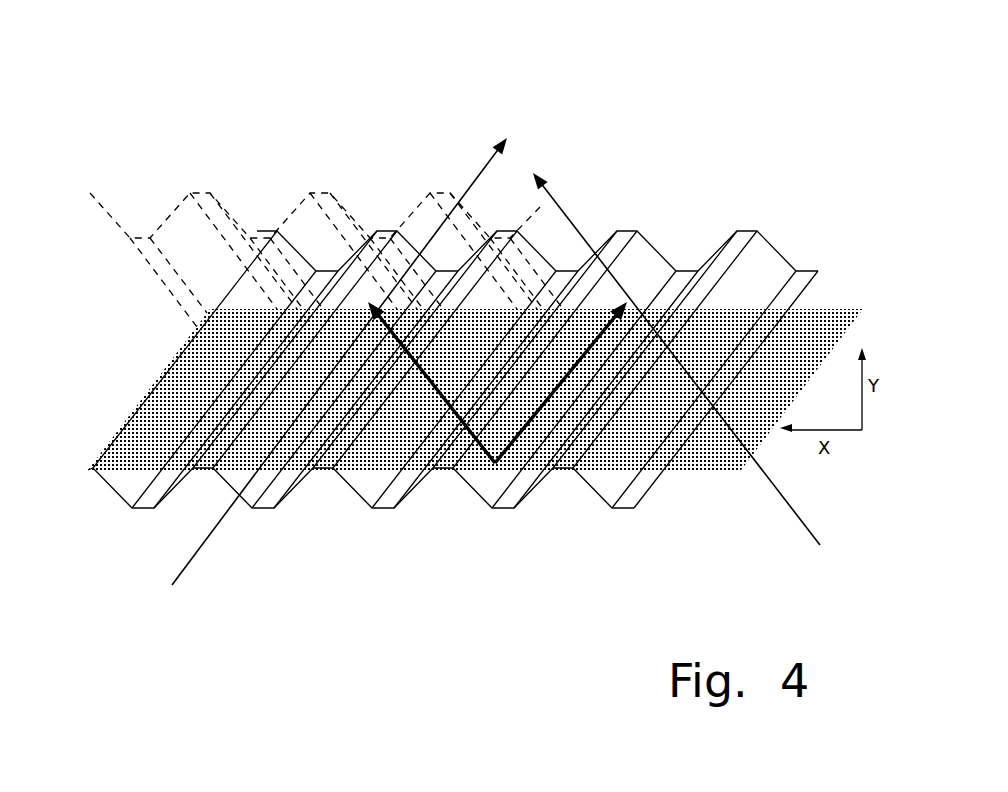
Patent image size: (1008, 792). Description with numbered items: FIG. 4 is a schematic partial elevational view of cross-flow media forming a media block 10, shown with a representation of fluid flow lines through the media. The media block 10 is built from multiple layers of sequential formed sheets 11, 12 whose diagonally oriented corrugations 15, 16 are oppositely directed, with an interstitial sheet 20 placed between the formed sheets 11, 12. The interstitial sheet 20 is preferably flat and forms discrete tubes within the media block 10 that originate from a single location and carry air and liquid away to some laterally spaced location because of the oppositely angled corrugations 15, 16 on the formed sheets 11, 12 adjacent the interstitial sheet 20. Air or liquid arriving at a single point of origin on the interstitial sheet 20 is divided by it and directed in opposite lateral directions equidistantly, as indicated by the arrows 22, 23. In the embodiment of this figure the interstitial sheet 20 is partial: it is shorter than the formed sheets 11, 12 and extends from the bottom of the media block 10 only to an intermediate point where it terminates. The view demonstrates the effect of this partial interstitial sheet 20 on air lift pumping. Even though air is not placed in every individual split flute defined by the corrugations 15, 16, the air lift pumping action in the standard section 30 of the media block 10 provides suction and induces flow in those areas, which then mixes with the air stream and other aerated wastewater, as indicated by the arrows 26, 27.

The media block 10 is at (733, 133).
The formed sheet 11 is at (146, 512).
The formed sheet 12 is at (160, 288).
The corrugation 15 is at (469, 352).
The corrugation 16 is at (318, 229).
The interstitial sheet 20 is at (843, 309).
The arrow 22 is at (471, 433).
The arrow 23 is at (521, 472).
The arrow 26 is at (497, 163).
The arrow 27 is at (545, 180).
The standard section 30 is at (776, 220).